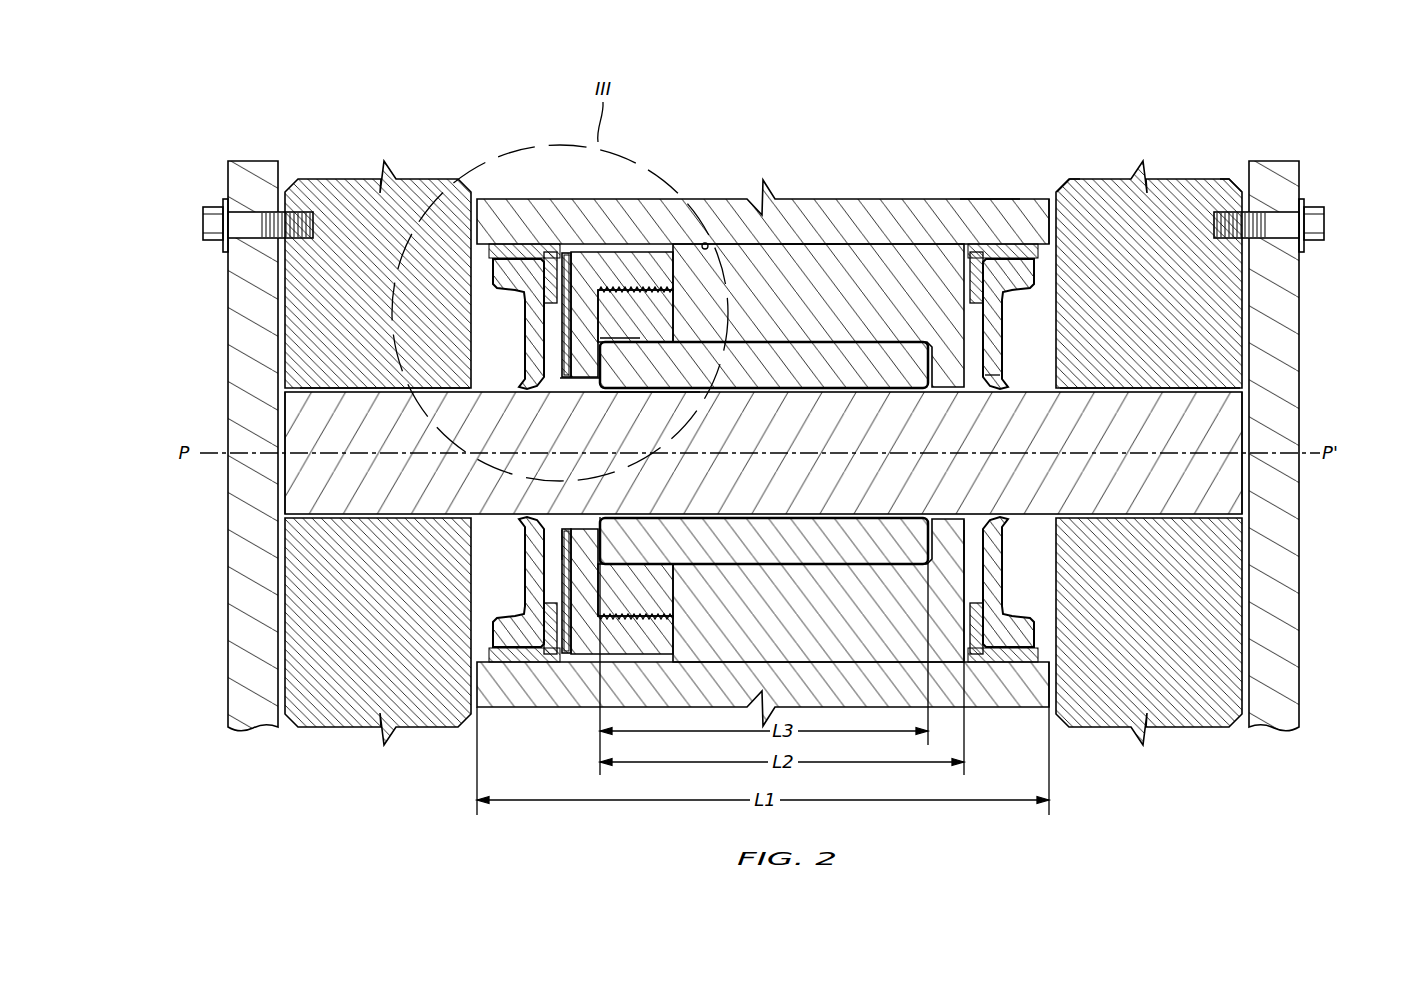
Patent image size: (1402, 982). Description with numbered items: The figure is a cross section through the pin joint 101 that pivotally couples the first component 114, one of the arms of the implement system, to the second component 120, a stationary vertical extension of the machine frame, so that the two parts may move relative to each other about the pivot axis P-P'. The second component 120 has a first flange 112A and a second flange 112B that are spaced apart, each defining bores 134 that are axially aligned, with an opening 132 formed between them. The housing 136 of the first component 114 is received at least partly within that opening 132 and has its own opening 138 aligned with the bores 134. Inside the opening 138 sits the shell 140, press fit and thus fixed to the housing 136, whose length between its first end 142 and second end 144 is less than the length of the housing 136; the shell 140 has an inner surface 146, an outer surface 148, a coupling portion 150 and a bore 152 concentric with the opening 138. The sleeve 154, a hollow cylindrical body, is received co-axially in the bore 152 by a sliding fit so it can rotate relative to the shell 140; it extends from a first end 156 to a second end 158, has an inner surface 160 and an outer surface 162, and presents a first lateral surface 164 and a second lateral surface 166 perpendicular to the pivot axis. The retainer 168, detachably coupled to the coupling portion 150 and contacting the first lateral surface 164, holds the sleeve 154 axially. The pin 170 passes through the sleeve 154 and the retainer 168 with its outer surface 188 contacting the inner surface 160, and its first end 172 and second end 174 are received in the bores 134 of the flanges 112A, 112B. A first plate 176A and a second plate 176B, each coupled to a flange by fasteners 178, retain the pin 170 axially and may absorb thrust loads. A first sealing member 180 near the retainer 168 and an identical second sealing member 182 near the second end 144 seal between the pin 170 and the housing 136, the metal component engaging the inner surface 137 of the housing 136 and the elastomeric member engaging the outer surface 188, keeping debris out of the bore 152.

The pin joint 101 is at (1076, 157).
The first flange 112A is at (322, 182).
The second flange 112B is at (1205, 182).
The first component 114 is at (987, 200).
The second component 120 is at (1238, 157).
The opening 132 is at (1050, 628).
The bores 134 is at (350, 396).
The housing 136 is at (878, 213).
The inner surface 137 is at (706, 242).
The opening 138 is at (1047, 245).
The shell 140 is at (893, 280).
The first end 142 is at (593, 300).
The second end 144 is at (965, 292).
The inner surface 146 is at (790, 343).
The outer surface 148 is at (810, 242).
The coupling portion 150 is at (643, 317).
The bore 152 is at (730, 367).
The sleeve 154 is at (866, 362).
The first end 156 is at (597, 525).
The second end 158 is at (931, 527).
The inner surface 160 is at (690, 396).
The outer surface 162 is at (600, 338).
The first lateral surface 164 is at (560, 378).
The second lateral surface 166 is at (1000, 368).
The retainer 168 is at (580, 273).
The pin 170 is at (310, 490).
The first end 172 is at (285, 466).
The second end 174 is at (1246, 466).
The first plate 176A is at (248, 680).
The second plate 176B is at (1282, 680).
The fasteners 178 is at (212, 217).
The first sealing member 180 is at (503, 265).
The second sealing member 182 is at (1003, 272).
The outer surface 188 is at (1195, 388).